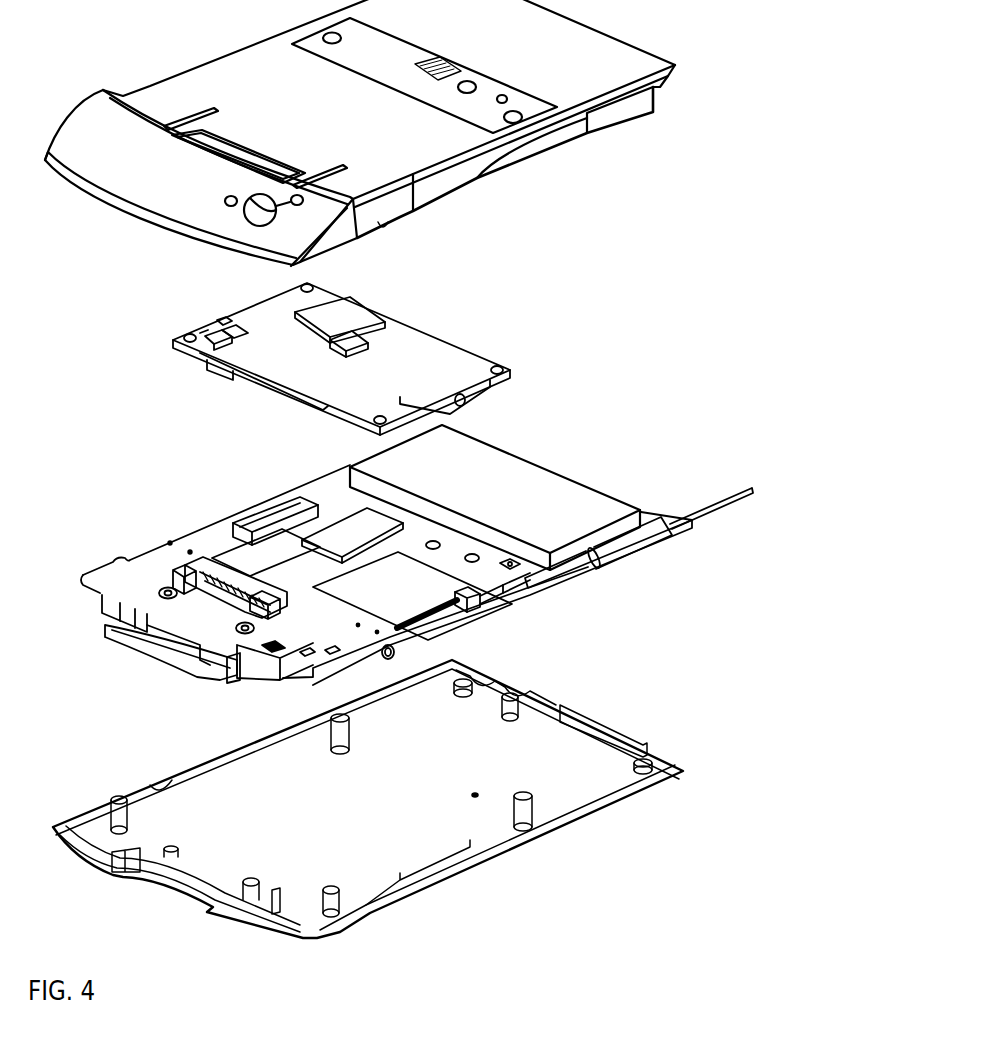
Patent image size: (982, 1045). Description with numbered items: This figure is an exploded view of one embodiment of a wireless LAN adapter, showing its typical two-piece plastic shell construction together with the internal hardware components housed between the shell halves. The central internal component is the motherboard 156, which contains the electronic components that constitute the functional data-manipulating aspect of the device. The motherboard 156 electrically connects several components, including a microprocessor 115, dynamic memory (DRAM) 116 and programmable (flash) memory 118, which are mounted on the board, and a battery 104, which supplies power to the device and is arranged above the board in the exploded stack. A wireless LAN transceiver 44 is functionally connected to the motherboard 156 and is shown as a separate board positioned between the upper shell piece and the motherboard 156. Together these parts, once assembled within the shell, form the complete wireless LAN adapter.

The wireless LAN transceiver 44 is at (173, 336).
The battery 104 is at (535, 473).
The microprocessor 115 is at (440, 613).
The dynamic memory (DRAM) 116 is at (362, 515).
The programmable (flash) memory 118 is at (268, 565).
The motherboard 156 is at (553, 592).